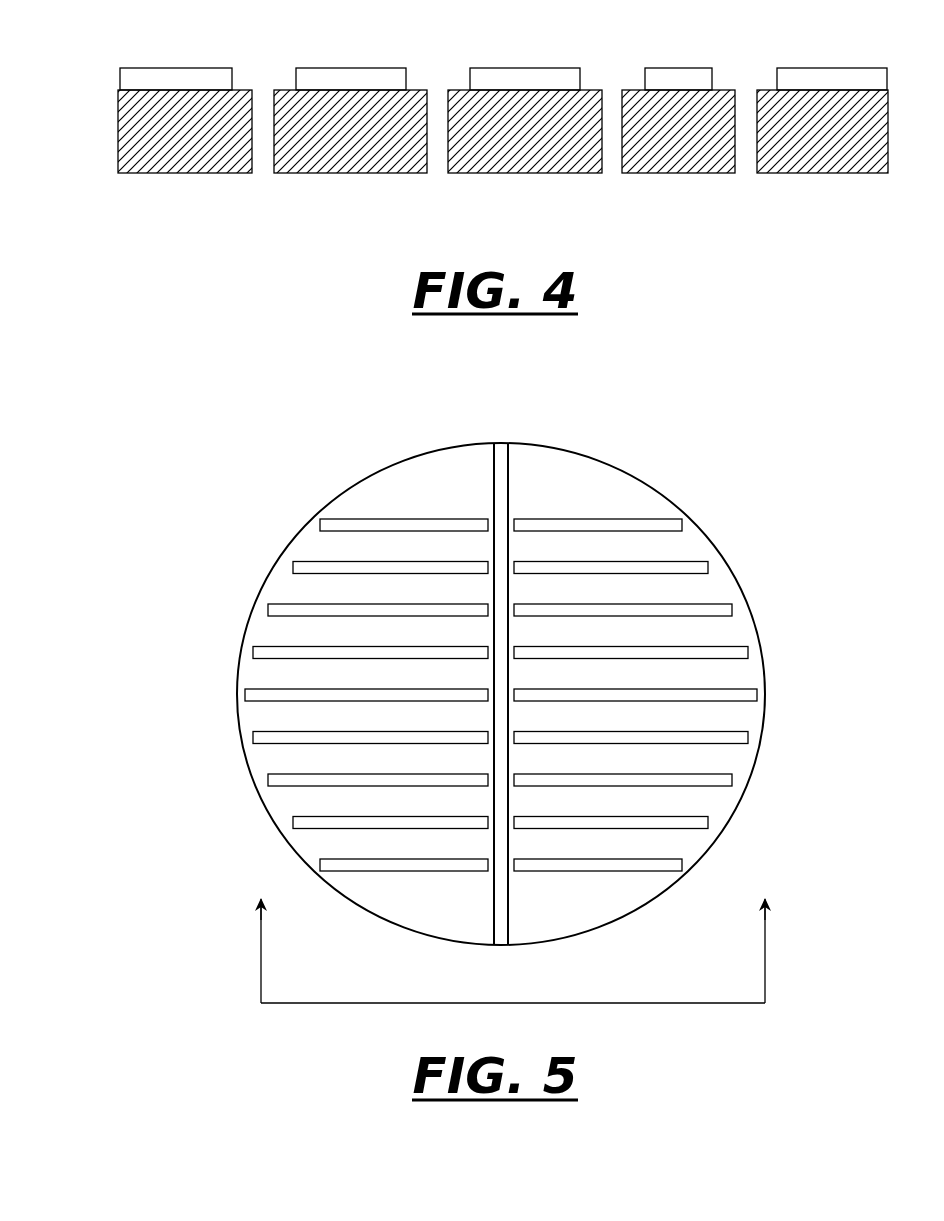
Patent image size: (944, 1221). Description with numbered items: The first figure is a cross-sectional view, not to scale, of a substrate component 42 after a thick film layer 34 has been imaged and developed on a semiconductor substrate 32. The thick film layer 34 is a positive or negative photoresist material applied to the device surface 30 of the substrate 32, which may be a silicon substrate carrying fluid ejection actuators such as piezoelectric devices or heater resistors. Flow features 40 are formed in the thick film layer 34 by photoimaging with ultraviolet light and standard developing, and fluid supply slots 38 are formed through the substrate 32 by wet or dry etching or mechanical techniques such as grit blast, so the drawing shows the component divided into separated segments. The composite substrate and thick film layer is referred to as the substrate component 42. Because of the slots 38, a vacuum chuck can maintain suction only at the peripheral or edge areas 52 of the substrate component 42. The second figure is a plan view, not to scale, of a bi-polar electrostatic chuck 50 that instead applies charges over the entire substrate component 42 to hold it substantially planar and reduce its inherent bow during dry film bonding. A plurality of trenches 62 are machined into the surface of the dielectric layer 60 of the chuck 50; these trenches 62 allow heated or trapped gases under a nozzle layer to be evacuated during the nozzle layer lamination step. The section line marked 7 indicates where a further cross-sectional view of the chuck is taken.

In FIG. 4, the device surface 30 is at (236, 88).
In FIG. 4, the semiconductor substrate 32 is at (543, 144).
In FIG. 4, the thick film layer 34 is at (326, 73).
In FIG. 4, the fluid supply slots 38 is at (261, 182).
In FIG. 4, the flow features 40 is at (254, 66).
In FIG. 4, the substrate component 42 is at (458, 143).
In FIG. 4, the peripheral or edge areas 52 is at (136, 178).
In FIG. 5, the bi-polar electrostatic chuck 50 is at (236, 565).
In FIG. 5, the dielectric layer 60 is at (538, 489).
In FIG. 5, the trenches 62 is at (272, 650).
In FIG. 5, the section line 7- 7 is at (513, 934).